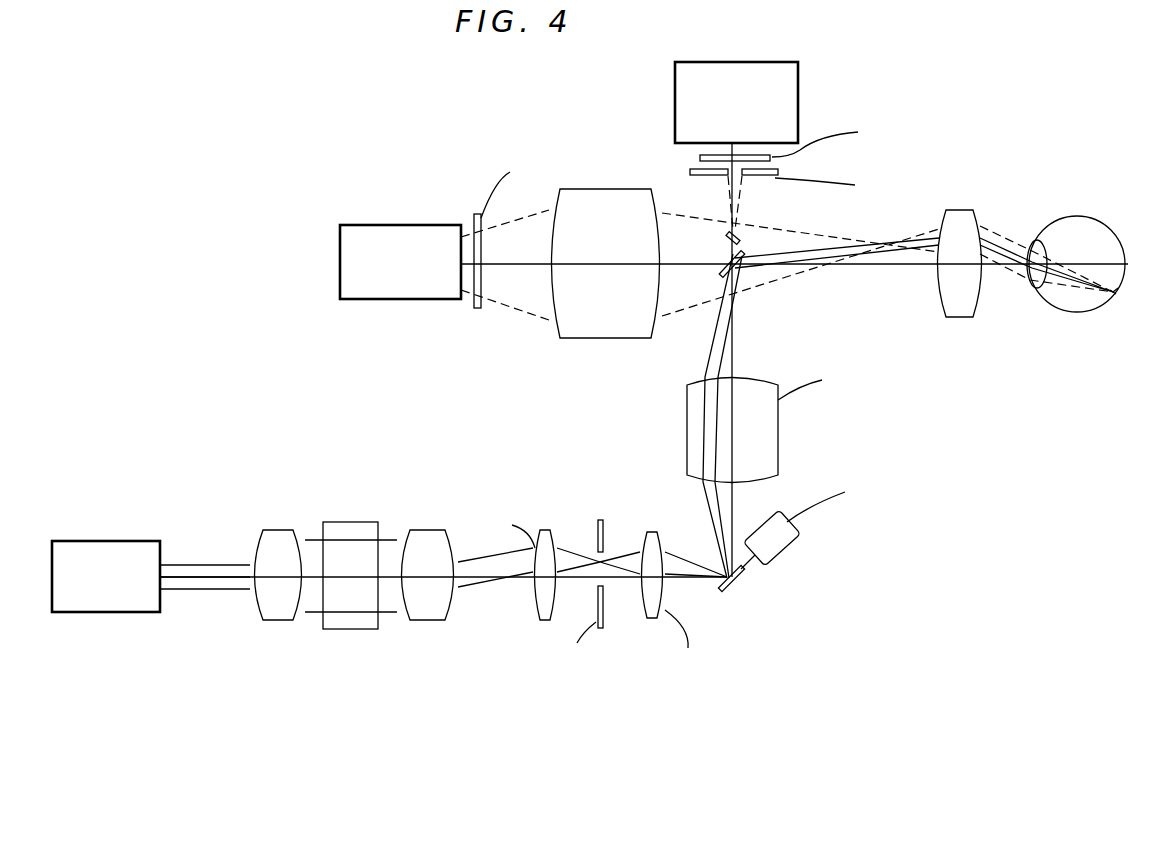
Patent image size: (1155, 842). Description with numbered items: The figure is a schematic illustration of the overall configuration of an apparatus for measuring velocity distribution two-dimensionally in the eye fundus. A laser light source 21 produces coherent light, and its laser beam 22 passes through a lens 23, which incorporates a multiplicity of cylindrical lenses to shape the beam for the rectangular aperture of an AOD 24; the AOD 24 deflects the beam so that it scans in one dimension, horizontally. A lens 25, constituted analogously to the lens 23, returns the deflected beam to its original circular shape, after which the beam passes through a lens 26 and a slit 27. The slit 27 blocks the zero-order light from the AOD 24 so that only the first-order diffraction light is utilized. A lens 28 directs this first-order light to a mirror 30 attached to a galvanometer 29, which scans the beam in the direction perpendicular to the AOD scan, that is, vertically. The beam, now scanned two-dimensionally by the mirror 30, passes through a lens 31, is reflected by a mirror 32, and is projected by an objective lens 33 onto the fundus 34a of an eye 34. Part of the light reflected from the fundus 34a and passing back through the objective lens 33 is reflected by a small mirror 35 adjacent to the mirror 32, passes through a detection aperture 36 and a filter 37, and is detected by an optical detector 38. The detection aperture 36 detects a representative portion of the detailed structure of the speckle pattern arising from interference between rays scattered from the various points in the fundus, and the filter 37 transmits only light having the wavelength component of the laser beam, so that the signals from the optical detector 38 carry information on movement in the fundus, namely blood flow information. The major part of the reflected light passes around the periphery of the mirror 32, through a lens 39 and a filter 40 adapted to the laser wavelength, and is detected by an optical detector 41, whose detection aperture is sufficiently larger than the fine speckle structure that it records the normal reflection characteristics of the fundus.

The laser light source 21 is at (86, 540).
The laser beam 22 is at (190, 566).
The lens 23 is at (268, 621).
The AOD 24 is at (338, 521).
The lens 25 is at (418, 620).
The lens 26 is at (540, 620).
The slit 27 is at (597, 520).
The lens 28 is at (648, 620).
The galvanometer 29 is at (797, 535).
The mirror 30 is at (735, 588).
The lens 31 is at (778, 422).
The mirror 32 is at (722, 278).
The objective lens 33 is at (953, 318).
The eye 34 is at (1060, 222).
The fundus 34a is at (1128, 280).
The small mirror 35 is at (740, 240).
The detection aperture 36 is at (778, 172).
The filter 37 is at (700, 157).
The optical detector 38 is at (801, 67).
The lens 39 is at (562, 338).
The filter 40 is at (477, 213).
The optical detector 41 is at (372, 300).